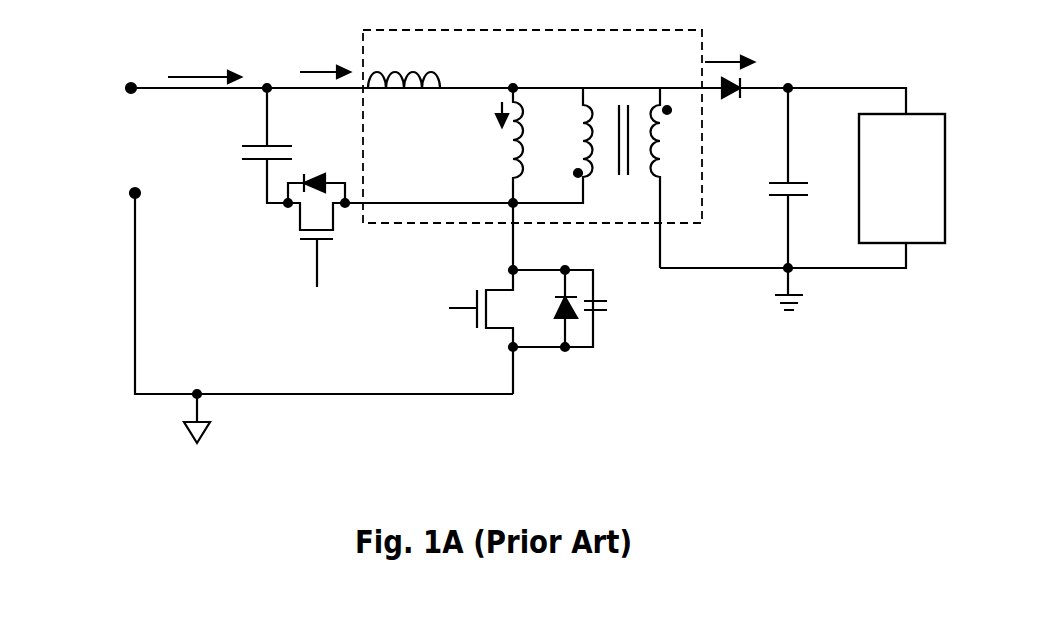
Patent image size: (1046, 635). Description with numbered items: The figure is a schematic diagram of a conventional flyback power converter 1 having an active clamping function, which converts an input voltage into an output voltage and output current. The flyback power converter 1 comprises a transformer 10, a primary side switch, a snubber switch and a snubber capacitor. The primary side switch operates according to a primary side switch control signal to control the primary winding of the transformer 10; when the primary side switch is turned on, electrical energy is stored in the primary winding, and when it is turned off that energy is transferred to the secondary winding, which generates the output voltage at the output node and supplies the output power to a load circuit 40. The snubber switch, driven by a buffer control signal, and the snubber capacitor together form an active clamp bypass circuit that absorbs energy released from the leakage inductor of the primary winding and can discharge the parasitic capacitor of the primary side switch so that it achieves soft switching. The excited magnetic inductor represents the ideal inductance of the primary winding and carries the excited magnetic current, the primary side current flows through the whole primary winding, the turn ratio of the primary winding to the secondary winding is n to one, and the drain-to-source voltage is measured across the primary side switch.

The flyback power converter 1 is at (103, 40).
The transformer 10 is at (689, 63).
The load circuit 40 is at (916, 231).